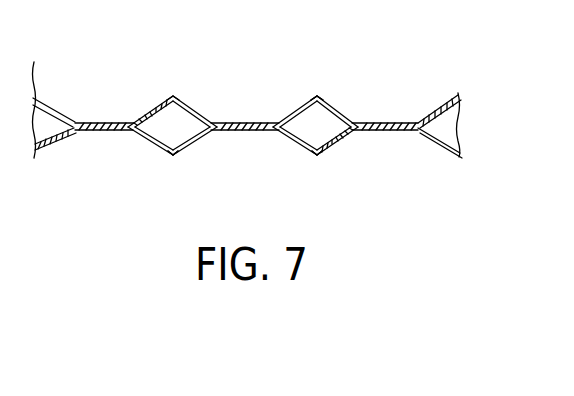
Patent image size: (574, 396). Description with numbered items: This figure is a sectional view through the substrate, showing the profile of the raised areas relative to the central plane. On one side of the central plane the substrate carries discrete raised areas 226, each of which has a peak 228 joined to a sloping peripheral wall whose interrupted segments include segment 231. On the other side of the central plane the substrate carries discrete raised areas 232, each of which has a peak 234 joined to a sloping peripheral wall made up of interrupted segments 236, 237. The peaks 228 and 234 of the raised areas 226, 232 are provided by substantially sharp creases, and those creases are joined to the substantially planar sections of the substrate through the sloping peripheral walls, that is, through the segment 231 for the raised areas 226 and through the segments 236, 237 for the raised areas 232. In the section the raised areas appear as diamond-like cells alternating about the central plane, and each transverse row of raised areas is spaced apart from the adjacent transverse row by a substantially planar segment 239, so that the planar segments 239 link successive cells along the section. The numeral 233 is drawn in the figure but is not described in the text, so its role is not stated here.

The discrete raised areas 226 is at (176, 96).
The peak 228 is at (175, 95).
The sloping peripheral wall segment 231 is at (148, 108).
The discrete raised areas 232 is at (183, 154).
The upper right strut of lattice cell 233 is at (196, 110).
The peak 234 is at (172, 157).
The sloping peripheral wall segment 236 is at (350, 138).
The sloping peripheral wall segment 237 is at (143, 143).
The substantially planar segment 239 is at (93, 124).